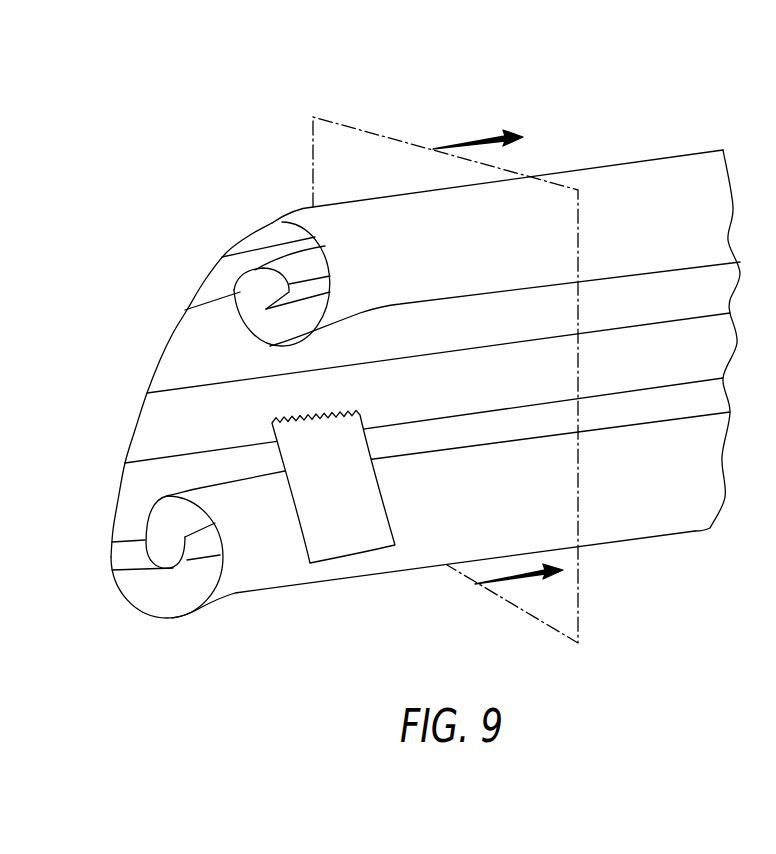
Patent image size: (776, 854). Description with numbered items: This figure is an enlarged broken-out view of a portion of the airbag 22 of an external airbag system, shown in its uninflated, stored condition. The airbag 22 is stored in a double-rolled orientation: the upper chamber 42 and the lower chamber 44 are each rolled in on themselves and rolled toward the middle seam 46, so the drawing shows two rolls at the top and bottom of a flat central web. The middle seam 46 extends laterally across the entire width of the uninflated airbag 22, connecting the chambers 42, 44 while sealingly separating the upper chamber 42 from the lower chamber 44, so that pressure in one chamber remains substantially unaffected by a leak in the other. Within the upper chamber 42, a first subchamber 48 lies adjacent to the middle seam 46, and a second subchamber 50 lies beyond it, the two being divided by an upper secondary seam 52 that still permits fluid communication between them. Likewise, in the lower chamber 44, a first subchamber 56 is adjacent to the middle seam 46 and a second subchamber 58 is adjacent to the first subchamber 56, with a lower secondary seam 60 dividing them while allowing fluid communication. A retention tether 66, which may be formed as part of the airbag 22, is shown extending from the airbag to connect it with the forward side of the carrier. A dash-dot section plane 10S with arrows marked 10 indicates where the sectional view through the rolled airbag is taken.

The section line 10 is at (507, 133).
The section plane 10S is at (347, 125).
The airbag 22 is at (698, 112).
The upper chamber 42 is at (270, 222).
The lower chamber 44 is at (152, 622).
The middle seam 46 is at (150, 425).
The first subchamber 48 is at (168, 347).
The second subchamber 50 is at (245, 284).
The upper secondary seam 52 is at (212, 282).
The first subchamber 56 is at (115, 500).
The second subchamber 58 is at (138, 597).
The lower secondary seam 60 is at (118, 557).
The retention tether 66 is at (303, 535).